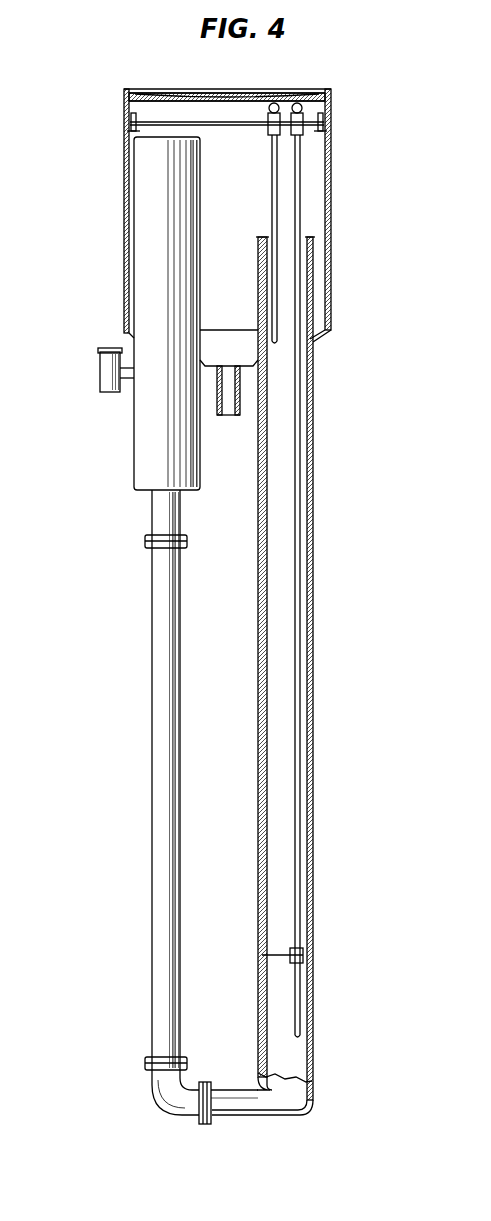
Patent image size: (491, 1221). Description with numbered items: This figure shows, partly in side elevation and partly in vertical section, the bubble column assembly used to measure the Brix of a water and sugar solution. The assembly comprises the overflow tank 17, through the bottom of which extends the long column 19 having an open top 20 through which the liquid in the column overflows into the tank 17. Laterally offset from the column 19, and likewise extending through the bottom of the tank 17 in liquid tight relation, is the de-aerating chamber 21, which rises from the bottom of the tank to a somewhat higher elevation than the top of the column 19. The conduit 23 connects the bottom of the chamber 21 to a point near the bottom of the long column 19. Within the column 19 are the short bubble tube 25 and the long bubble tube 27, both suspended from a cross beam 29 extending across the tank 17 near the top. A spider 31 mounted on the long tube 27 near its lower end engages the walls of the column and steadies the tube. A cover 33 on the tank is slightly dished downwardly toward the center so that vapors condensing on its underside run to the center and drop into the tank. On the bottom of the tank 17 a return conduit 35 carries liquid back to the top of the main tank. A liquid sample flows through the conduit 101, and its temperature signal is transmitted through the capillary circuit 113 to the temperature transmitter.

The overflow tank 17 is at (333, 175).
The long column 19 is at (313, 562).
The open top 20 is at (300, 237).
The de-aerating chamber 21 is at (201, 232).
The conduit 23 is at (152, 748).
The short bubble tube 25 is at (272, 180).
The long bubble tube 27 is at (300, 728).
The cross beam 29 is at (246, 126).
The spider 31 is at (282, 958).
The cover 33 is at (192, 92).
The return conduit 35 is at (230, 416).
The conduit 101 is at (112, 386).
The capillary circuit 113 is at (108, 350).